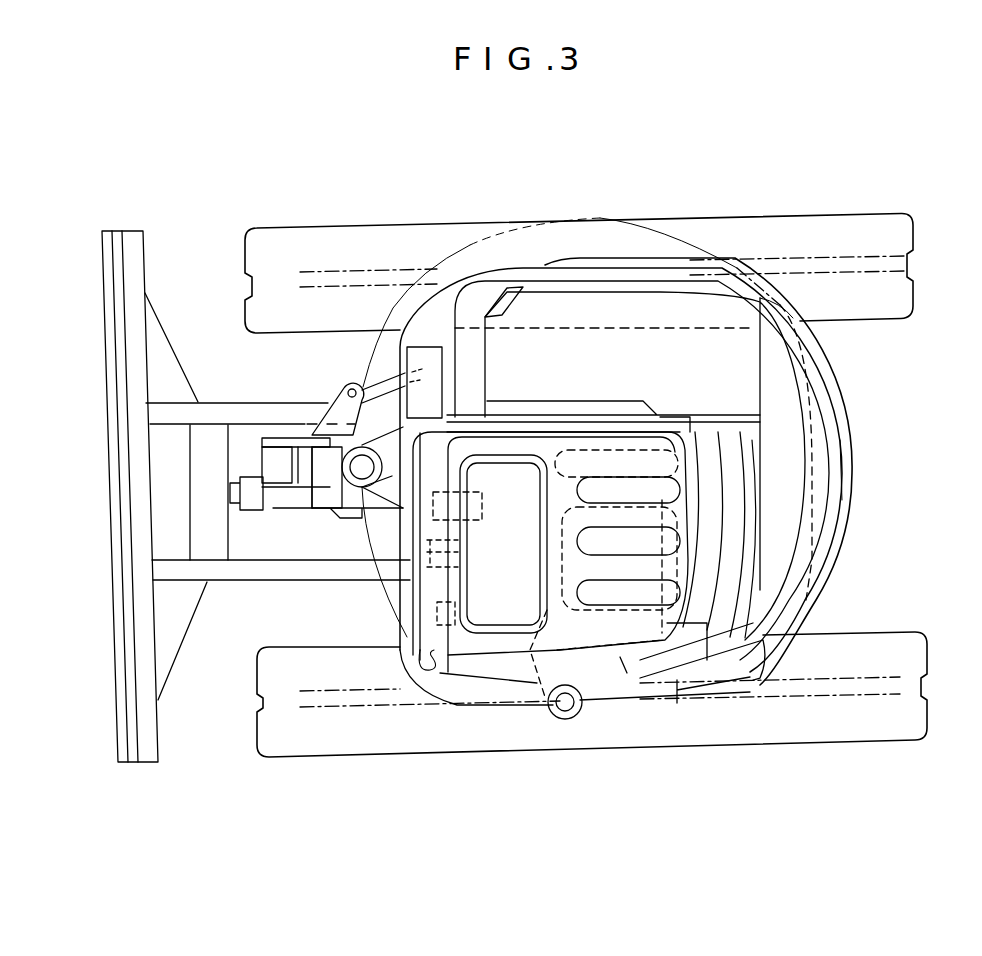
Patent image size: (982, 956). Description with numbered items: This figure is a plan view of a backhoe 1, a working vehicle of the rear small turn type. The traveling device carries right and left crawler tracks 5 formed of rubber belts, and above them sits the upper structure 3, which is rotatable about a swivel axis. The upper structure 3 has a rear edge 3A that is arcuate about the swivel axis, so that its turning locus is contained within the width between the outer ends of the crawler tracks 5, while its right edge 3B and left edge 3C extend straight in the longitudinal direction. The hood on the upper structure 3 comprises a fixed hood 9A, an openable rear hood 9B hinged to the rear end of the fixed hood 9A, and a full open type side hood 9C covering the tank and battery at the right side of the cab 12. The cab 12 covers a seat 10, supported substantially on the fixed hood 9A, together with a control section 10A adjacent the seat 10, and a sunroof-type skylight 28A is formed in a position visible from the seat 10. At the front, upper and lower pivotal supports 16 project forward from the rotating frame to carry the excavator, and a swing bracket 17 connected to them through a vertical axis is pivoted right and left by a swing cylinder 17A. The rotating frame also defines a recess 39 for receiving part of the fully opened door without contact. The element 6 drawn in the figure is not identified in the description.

The backhoe 1 is at (388, 205).
The upper structure 3 is at (851, 382).
The rear edge 3A is at (855, 482).
The right edge 3B is at (603, 257).
The left edge 3C is at (522, 710).
The crawler tracks 5 is at (857, 228).
The front upright frame 6 is at (122, 580).
The fixed hood 9A is at (750, 592).
The rear hood 9B is at (820, 440).
The side hood 9C is at (690, 307).
The seat 10 is at (660, 506).
The control section 10A is at (576, 446).
The cab 12 is at (677, 425).
The pivotal supports 16 is at (403, 470).
The swing bracket 17 is at (328, 418).
The swing cylinder 17A is at (395, 380).
The skylight 28A is at (497, 602).
The recess 39 is at (502, 697).